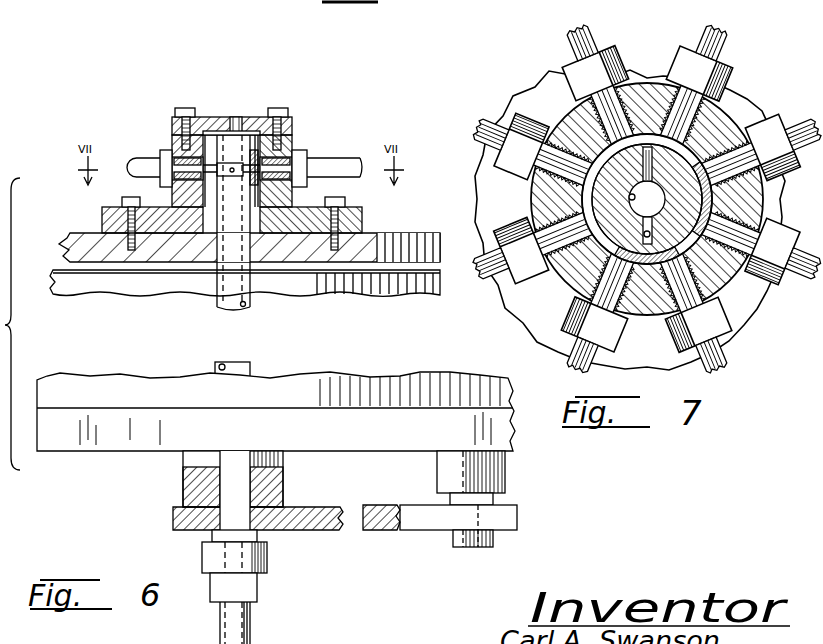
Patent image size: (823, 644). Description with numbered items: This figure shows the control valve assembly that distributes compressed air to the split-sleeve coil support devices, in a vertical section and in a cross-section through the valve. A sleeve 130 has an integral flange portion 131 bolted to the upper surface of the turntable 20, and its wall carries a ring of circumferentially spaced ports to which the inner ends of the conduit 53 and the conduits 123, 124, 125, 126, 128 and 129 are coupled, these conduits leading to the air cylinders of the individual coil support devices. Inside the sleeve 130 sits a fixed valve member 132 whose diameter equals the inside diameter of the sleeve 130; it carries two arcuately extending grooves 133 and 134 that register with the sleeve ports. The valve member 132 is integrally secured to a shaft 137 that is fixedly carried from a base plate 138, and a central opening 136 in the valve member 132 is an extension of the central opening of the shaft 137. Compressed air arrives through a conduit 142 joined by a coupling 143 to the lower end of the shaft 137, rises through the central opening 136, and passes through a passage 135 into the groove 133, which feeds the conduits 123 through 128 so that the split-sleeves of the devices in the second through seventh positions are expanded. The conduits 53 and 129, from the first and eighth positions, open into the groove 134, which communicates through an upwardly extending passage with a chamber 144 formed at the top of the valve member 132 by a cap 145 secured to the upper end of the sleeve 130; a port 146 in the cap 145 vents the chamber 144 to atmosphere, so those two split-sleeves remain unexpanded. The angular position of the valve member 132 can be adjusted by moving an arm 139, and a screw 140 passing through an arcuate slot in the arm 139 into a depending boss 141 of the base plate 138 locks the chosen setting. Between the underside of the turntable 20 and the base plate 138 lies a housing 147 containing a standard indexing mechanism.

In FIG. 6, the turntable 20 is at (407, 235).
In FIG. 7, the conduit 53 is at (578, 350).
In FIG. 7, the conduit 123 is at (494, 252).
In FIG. 6, the conduit 124 is at (137, 158).
In FIG. 7, the conduit 124 is at (498, 133).
In FIG. 7, the conduit 125 is at (583, 43).
In FIG. 7, the conduit 126 is at (701, 40).
In FIG. 6, the conduit 128 is at (327, 158).
In FIG. 7, the conduit 129 is at (723, 352).
In FIG. 6, the sleeve 130 is at (291, 198).
In FIG. 7, the sleeve 130 is at (560, 270).
In FIG. 6, the flange portion 131 is at (354, 213).
In FIG. 6, the fixed valve member 132 is at (220, 117).
In FIG. 7, the fixed valve member 132 is at (562, 298).
In FIG. 6, the arcuate groove 133 is at (206, 133).
In FIG. 7, the arcuate groove 133 is at (647, 133).
In FIG. 6, the arcuate groove 134 is at (254, 160).
In FIG. 7, the arcuate groove 134 is at (647, 266).
In FIG. 7, the passage 135 is at (682, 143).
In FIG. 7, the central opening 136 is at (629, 196).
In FIG. 6, the shaft 137 is at (250, 362).
In FIG. 6, the base plate 138 is at (478, 413).
In FIG. 6, the arm 139 is at (410, 523).
In FIG. 6, the screw 140 is at (494, 544).
In FIG. 6, the depending boss 141 is at (506, 473).
In FIG. 6, the conduit 142 is at (251, 622).
In FIG. 6, the coupling 143 is at (268, 563).
In FIG. 7, the coupling 143 is at (644, 236).
In FIG. 6, the chamber 144 is at (240, 131).
In FIG. 6, the cap 145 is at (288, 121).
In FIG. 6, the port 146 is at (233, 117).
In FIG. 6, the housing 147 is at (407, 295).